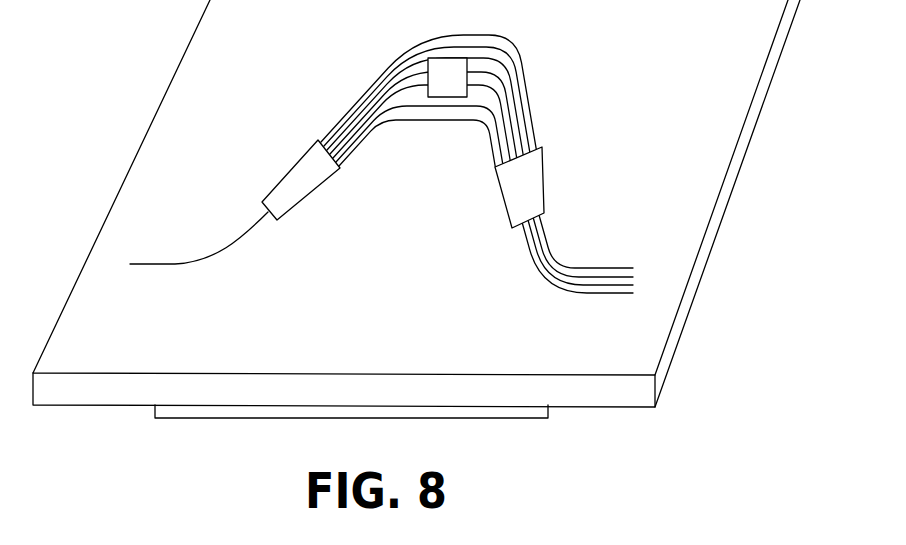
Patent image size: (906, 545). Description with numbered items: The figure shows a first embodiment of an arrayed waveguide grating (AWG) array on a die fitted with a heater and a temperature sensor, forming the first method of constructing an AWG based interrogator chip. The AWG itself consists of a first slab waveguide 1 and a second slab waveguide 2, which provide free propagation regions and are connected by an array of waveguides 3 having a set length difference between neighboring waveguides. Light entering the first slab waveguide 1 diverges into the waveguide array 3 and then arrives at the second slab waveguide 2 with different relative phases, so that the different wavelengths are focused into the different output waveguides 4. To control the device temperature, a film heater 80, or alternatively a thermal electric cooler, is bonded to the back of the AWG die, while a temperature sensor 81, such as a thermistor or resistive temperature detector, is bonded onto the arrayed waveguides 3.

The first slab waveguide 1 is at (292, 187).
The second slab waveguide 2 is at (530, 182).
The array of waveguides 3 is at (353, 110).
The output waveguides 4 is at (532, 260).
The film heater 80 is at (322, 408).
The temperature sensor 81 is at (453, 73).